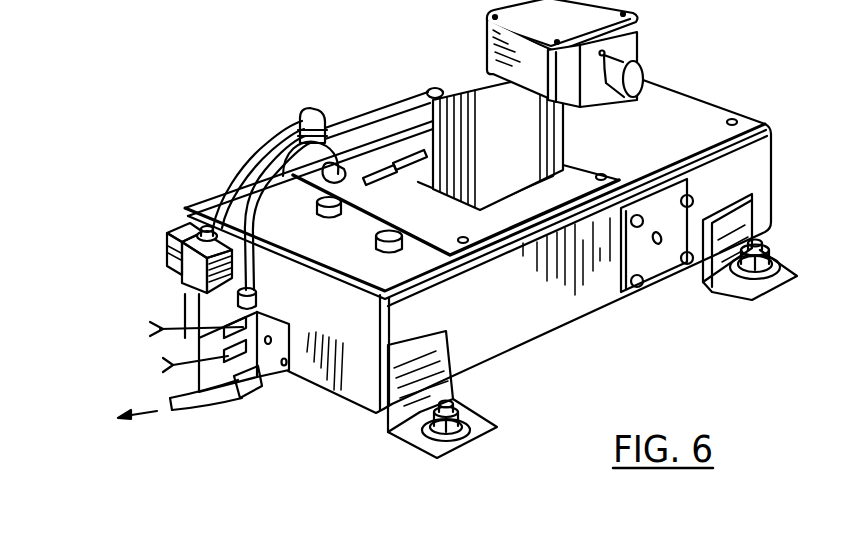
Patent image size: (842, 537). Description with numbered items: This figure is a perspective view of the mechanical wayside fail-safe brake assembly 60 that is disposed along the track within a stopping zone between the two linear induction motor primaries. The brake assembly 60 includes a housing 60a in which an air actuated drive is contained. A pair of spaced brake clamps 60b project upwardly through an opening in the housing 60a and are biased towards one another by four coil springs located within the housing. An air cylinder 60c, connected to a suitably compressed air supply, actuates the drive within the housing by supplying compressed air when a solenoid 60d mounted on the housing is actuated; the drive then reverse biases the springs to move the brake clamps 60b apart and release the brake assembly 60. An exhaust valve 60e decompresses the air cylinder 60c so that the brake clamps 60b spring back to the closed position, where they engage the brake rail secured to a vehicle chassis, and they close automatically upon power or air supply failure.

The brake assembly 60 is at (206, 138).
The housing 60a is at (563, 303).
The brake clamps 60b is at (565, 144).
The air cylinder 60c is at (353, 130).
The solenoid 60d is at (281, 368).
The exhaust valve 60e is at (283, 307).